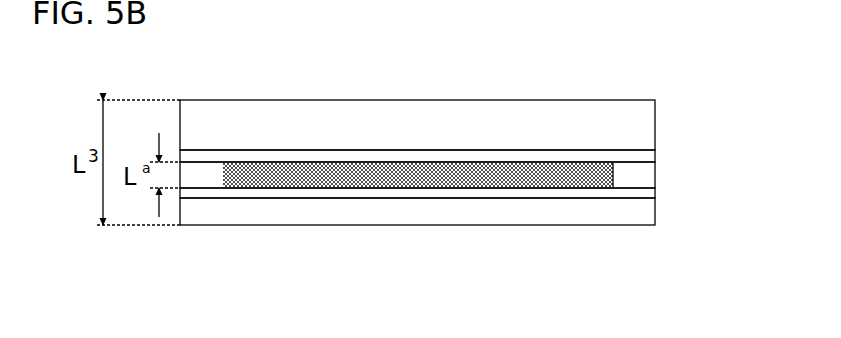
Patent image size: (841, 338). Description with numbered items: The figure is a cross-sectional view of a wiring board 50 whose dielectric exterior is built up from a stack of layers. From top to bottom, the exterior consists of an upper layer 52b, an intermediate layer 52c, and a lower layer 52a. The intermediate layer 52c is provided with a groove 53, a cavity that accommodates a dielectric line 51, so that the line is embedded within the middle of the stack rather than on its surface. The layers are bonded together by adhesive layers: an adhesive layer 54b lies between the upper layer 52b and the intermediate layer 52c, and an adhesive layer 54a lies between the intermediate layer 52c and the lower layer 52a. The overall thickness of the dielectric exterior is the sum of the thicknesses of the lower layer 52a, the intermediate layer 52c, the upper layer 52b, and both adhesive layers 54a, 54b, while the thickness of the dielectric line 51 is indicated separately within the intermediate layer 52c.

The wiring board 50 is at (460, 145).
The dielectric line 51 is at (518, 175).
The lower layer of dielectric exterior 52a is at (648, 218).
The upper layer of dielectric exterior 52b is at (642, 118).
The intermediate layer 52c is at (642, 175).
The groove 53 is at (613, 173).
The adhesive layer 54a is at (648, 193).
The adhesive layer 54b is at (648, 157).